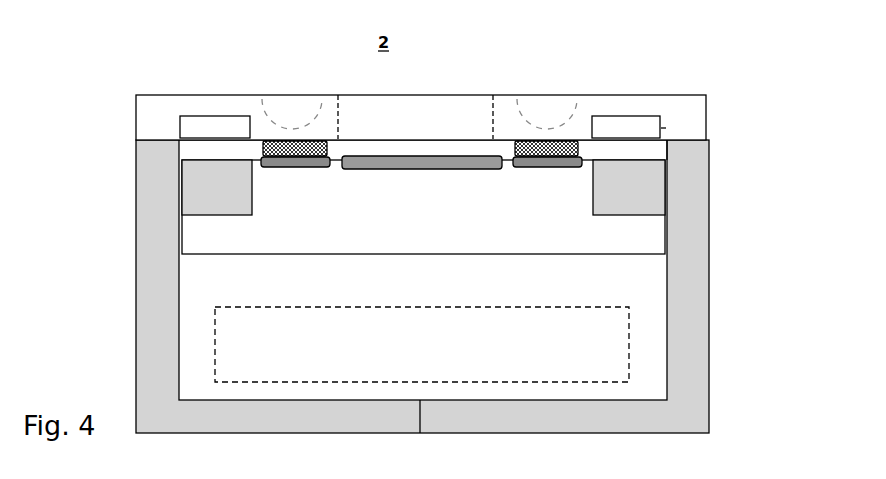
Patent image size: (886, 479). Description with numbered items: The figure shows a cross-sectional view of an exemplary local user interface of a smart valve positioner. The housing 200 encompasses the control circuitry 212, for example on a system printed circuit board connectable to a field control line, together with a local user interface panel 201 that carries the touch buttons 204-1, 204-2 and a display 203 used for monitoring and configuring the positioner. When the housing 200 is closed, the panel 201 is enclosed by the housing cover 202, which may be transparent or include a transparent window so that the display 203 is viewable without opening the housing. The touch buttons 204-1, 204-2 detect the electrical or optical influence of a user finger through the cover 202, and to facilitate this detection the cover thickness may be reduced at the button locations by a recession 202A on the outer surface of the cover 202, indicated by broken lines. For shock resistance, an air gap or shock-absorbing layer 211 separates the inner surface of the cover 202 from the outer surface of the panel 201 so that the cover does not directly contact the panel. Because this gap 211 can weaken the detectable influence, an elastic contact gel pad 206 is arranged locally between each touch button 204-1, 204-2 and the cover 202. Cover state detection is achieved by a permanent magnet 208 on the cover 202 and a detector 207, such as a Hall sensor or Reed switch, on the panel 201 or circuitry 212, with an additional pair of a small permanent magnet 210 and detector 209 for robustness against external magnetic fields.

The housing 200 is at (705, 331).
The local user interface panel 201 is at (412, 222).
The housing cover 202 is at (457, 94).
The recession 202A is at (547, 105).
The display 203 is at (383, 156).
The touch button 204-1 is at (293, 167).
The touch button 204-2 is at (547, 168).
The contact gel pad 206 is at (273, 141).
The detector 207 is at (185, 195).
The permanent magnet 208 is at (218, 116).
The detector 209 is at (657, 205).
The permanent magnet 210 is at (618, 116).
The gap 211 is at (648, 153).
The circuitry 212 is at (422, 344).